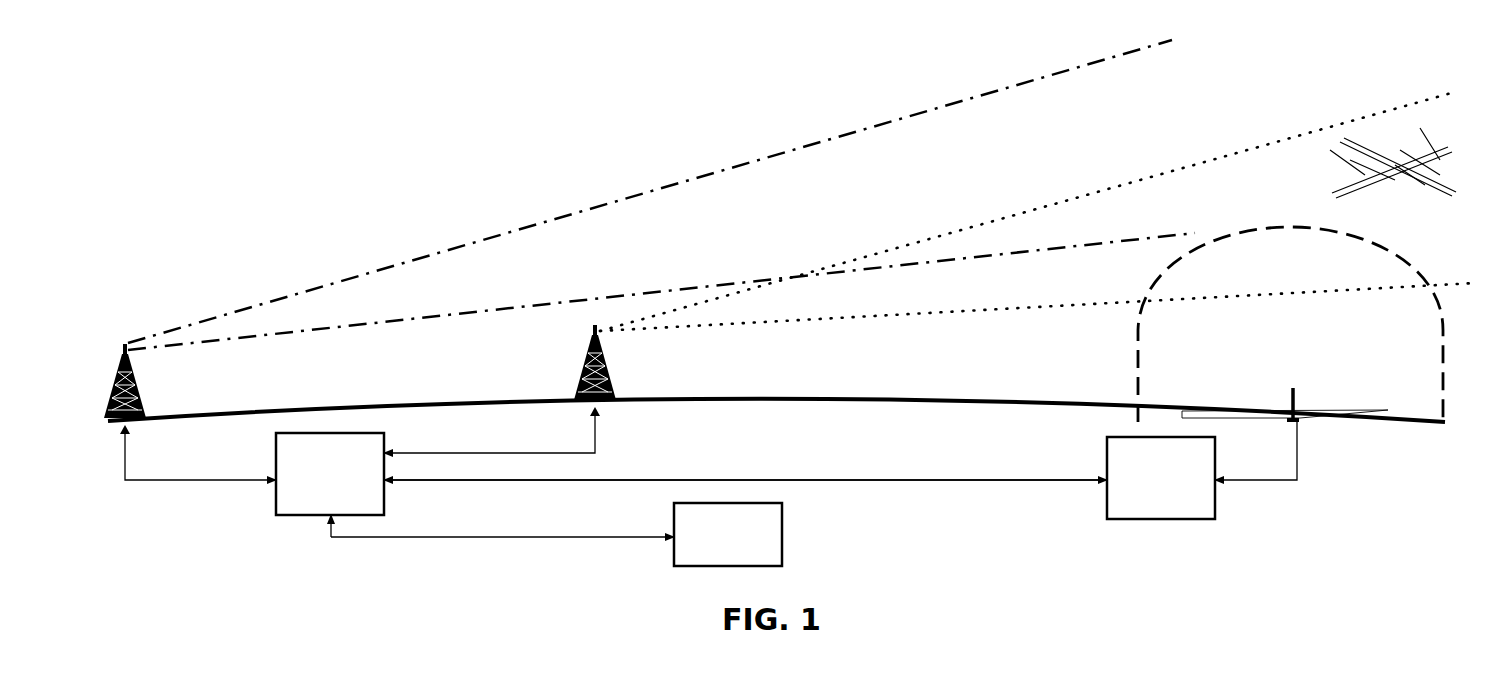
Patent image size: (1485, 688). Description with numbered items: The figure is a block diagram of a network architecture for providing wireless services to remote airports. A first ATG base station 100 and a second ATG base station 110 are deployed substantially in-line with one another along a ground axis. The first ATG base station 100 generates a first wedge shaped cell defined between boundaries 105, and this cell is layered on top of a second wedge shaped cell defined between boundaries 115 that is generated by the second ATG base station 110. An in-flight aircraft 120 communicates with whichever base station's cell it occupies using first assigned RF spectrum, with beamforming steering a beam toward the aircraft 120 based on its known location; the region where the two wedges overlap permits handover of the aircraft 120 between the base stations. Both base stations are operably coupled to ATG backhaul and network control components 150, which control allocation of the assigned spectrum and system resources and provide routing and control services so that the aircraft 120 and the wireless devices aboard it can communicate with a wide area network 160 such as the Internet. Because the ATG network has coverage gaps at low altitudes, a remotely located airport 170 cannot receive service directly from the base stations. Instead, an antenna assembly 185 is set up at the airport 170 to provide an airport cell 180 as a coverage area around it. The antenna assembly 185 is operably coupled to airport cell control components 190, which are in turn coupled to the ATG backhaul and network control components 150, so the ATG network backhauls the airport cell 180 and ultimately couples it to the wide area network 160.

The first ATG base station 100 is at (585, 385).
The boundaries 105 is at (935, 234).
The second ATG base station 110 is at (137, 392).
The boundaries 115 is at (338, 283).
The in-flight aircraft 120 is at (1385, 150).
The ATG backhaul and network control components 150 is at (276, 506).
The wide area network (WAN) 160 is at (674, 546).
The airport 170 is at (1330, 422).
The airport cell 180 is at (1383, 240).
The antenna assembly 185 is at (1293, 389).
The airport cell control components 190 is at (1215, 504).